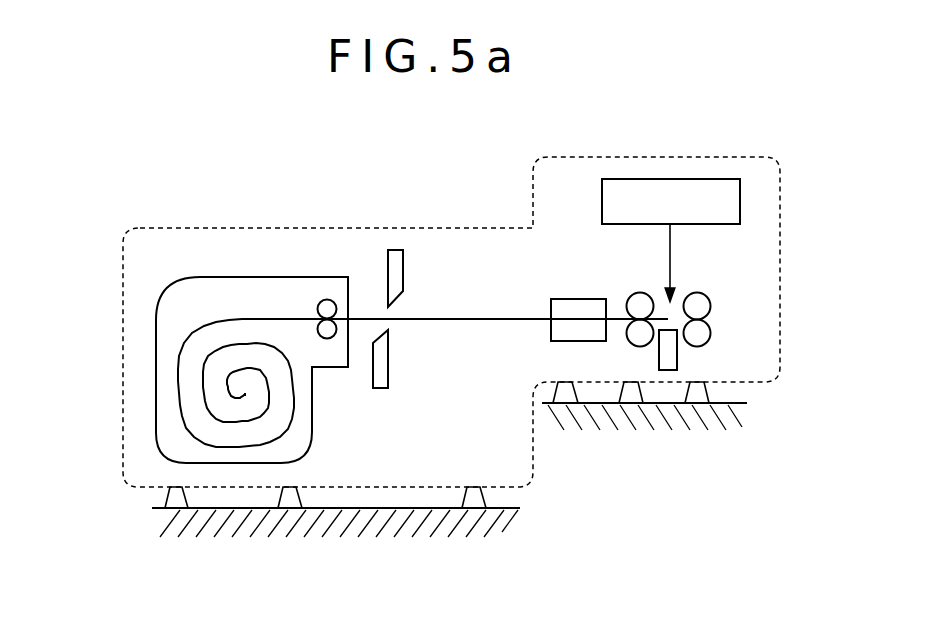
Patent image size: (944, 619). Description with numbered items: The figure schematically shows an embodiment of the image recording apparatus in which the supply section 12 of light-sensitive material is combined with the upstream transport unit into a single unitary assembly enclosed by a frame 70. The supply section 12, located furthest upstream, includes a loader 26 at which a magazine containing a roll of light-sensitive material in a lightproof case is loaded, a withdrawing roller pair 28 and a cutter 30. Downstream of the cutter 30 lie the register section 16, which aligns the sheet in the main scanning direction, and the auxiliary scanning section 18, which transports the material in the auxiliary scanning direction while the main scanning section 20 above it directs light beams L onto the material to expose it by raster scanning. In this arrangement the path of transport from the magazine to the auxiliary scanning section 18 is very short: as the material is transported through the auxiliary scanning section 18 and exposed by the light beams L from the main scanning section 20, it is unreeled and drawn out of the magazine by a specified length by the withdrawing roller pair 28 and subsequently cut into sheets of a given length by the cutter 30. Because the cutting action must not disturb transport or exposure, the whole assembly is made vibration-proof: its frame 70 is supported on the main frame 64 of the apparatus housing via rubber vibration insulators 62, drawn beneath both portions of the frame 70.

The light-sensitive material supply section 12 is at (288, 249).
The register section 16 is at (575, 299).
The auxiliary scanning section 18 is at (687, 285).
The main scanning section 20 is at (672, 203).
The light beams L is at (668, 258).
The loader 26 is at (156, 395).
The withdrawing roller pair 28 is at (328, 340).
The cutter 30 is at (400, 250).
The rubber vibration insulators 62 is at (173, 503).
The main frame 64 is at (167, 527).
The frame 70 is at (590, 157).